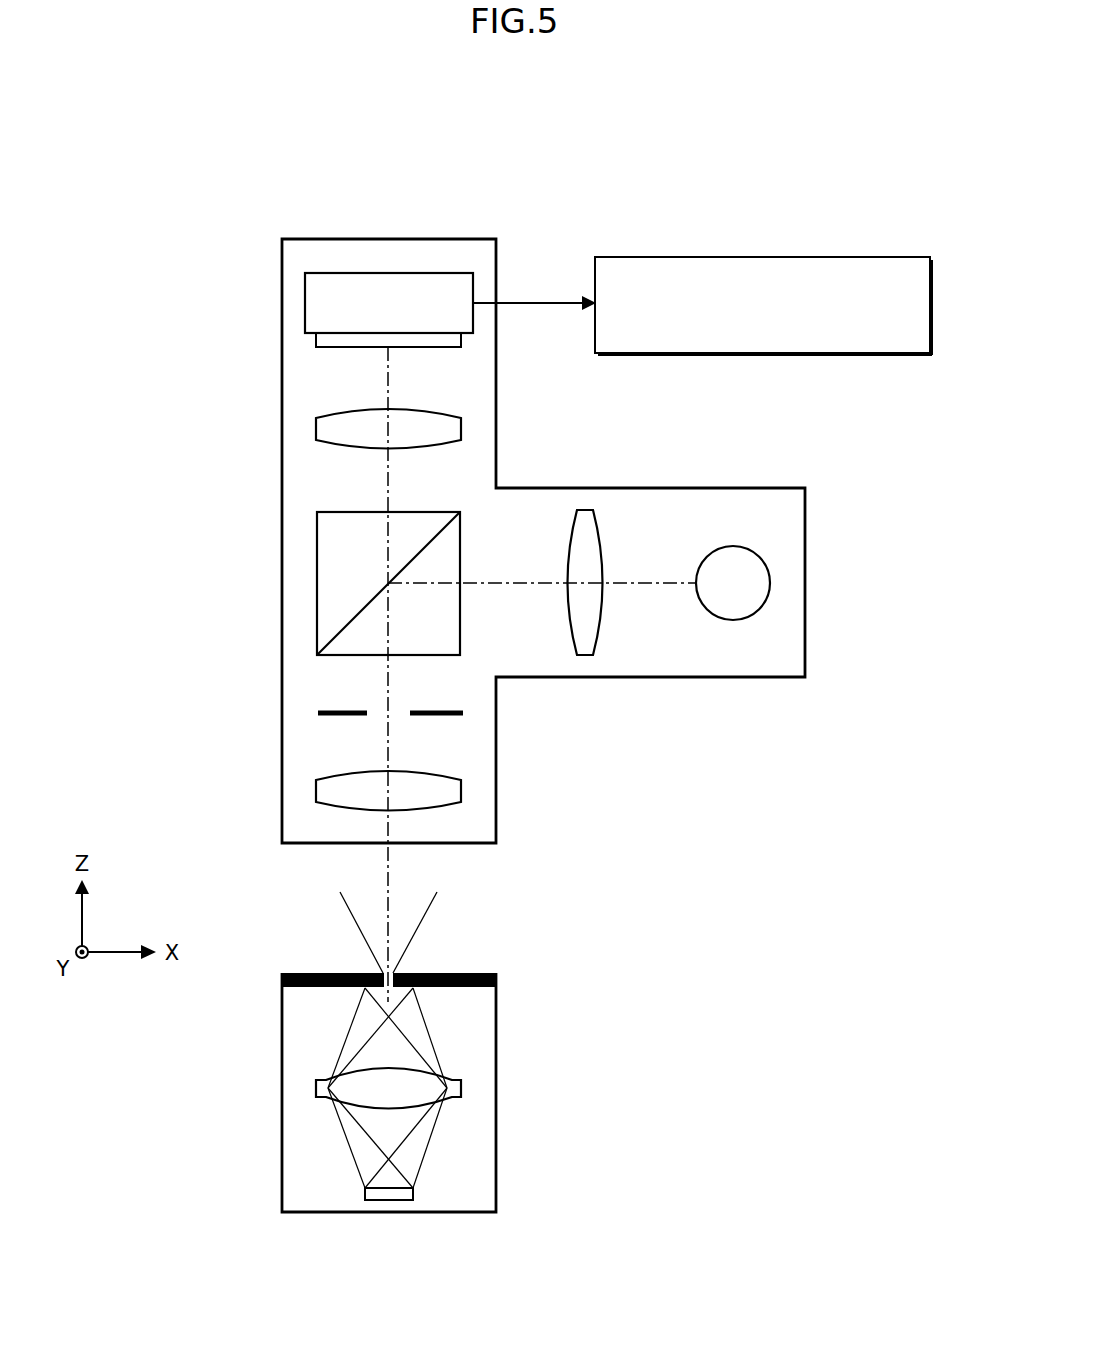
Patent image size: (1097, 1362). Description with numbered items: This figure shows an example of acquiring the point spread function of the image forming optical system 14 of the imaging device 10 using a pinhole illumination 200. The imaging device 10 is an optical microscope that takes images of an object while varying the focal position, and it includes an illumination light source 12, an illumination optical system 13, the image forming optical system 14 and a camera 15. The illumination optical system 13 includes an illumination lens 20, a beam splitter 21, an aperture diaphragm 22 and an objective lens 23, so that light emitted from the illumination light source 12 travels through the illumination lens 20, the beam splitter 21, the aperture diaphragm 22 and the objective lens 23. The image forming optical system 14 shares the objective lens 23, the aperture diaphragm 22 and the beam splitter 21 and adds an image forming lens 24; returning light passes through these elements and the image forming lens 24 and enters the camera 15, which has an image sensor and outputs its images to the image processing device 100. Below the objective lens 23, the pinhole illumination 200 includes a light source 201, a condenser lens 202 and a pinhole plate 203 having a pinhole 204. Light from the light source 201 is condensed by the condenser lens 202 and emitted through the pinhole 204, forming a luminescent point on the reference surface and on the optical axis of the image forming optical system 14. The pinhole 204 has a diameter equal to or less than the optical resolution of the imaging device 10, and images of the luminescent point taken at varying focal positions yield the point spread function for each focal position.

The imaging device 10 is at (510, 601).
The image processing device 100 is at (935, 263).
The camera 15 is at (305, 303).
The image forming optical system 14 is at (339, 584).
The image forming lens 24 is at (320, 429).
The beam splitter 21 is at (320, 583).
The aperture diaphragm 22 is at (318, 713).
The objective lens 23 is at (320, 791).
The illumination optical system 13 is at (669, 546).
The illumination lens 20 is at (585, 515).
The illumination light source 12 is at (733, 548).
The pinhole illumination 200 is at (387, 1052).
The light source 201 is at (370, 1192).
The condenser lens 202 is at (328, 1086).
The pinhole plate 203 is at (290, 978).
The pinhole 204 is at (393, 972).